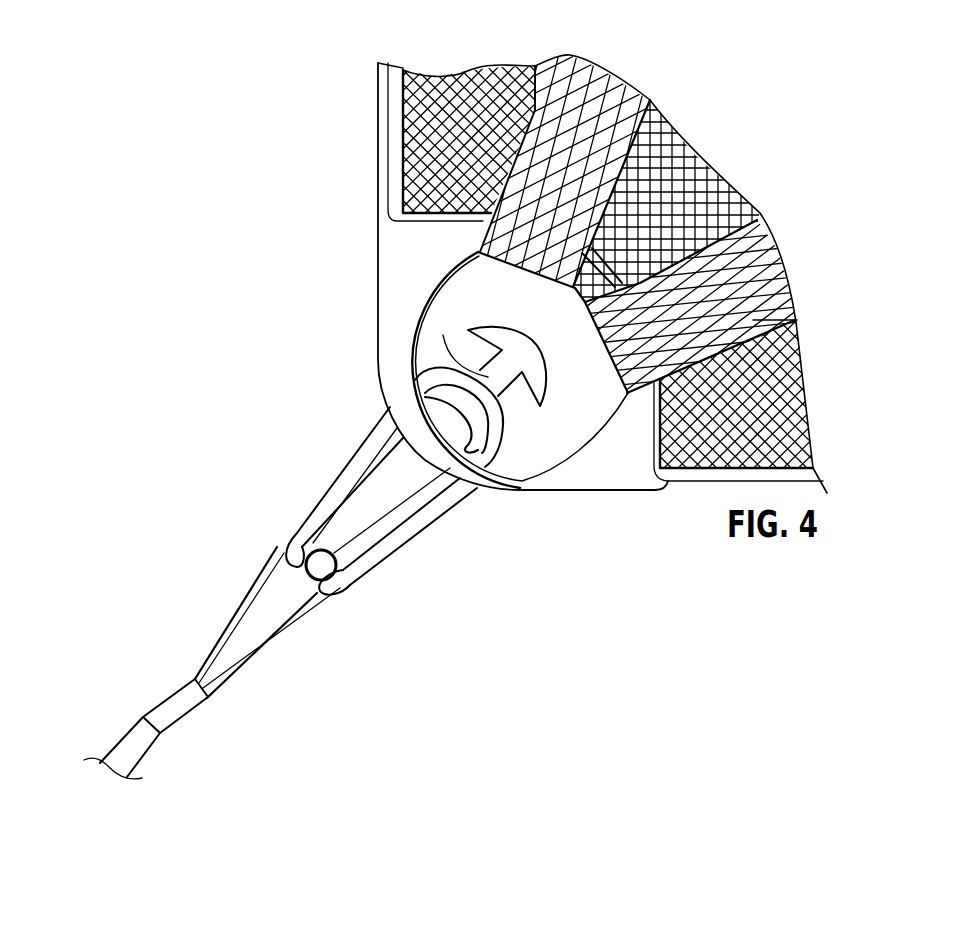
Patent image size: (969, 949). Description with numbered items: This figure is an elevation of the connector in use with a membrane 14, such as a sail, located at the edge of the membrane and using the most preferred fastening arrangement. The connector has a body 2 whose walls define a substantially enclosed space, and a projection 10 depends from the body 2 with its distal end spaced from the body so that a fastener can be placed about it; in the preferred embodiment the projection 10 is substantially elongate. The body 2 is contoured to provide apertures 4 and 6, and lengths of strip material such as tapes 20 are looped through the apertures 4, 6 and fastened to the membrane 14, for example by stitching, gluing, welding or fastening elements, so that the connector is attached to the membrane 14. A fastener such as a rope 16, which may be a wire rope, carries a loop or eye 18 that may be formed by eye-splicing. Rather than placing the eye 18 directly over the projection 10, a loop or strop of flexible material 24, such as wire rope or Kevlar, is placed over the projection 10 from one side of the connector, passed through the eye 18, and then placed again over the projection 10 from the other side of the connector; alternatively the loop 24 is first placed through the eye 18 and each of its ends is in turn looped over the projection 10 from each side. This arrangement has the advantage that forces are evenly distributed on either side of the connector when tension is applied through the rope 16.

The body 2 is at (572, 477).
The aperture 4 is at (405, 220).
The aperture 6 is at (654, 453).
The projection 10 is at (443, 335).
The membrane 14 is at (647, 117).
The rope 16 is at (136, 742).
The eye 18 is at (273, 645).
The tapes 20 is at (484, 97).
The loop of flexible material 24 is at (348, 473).